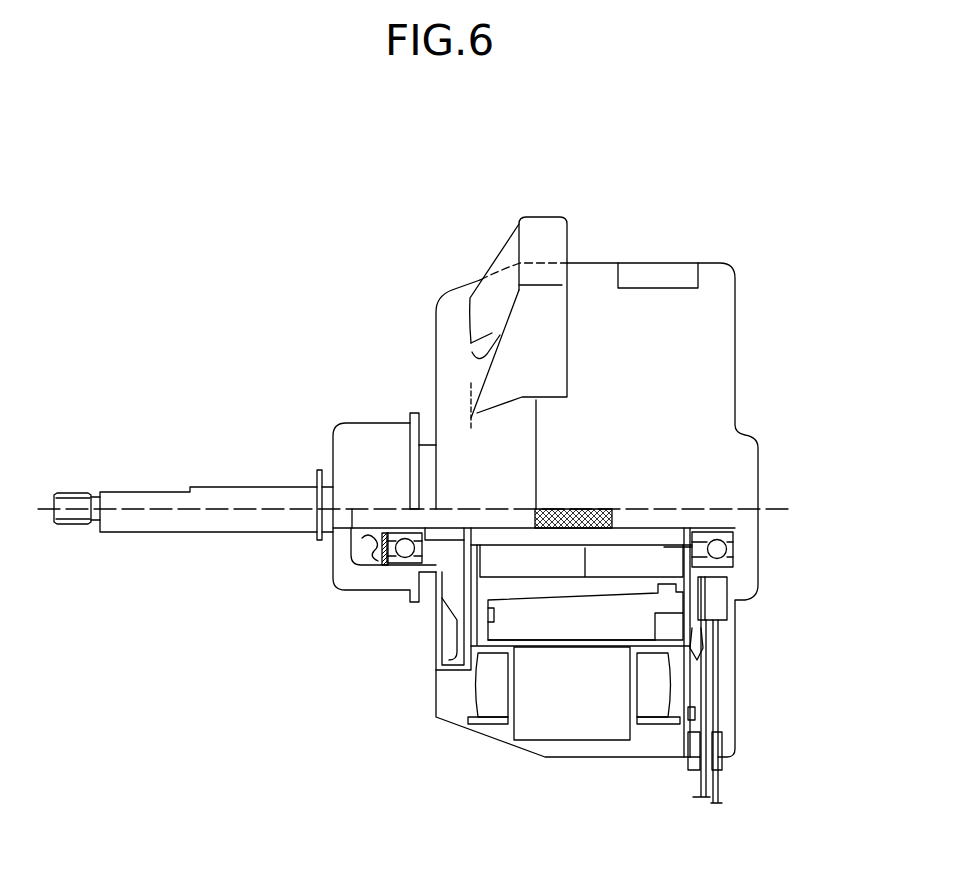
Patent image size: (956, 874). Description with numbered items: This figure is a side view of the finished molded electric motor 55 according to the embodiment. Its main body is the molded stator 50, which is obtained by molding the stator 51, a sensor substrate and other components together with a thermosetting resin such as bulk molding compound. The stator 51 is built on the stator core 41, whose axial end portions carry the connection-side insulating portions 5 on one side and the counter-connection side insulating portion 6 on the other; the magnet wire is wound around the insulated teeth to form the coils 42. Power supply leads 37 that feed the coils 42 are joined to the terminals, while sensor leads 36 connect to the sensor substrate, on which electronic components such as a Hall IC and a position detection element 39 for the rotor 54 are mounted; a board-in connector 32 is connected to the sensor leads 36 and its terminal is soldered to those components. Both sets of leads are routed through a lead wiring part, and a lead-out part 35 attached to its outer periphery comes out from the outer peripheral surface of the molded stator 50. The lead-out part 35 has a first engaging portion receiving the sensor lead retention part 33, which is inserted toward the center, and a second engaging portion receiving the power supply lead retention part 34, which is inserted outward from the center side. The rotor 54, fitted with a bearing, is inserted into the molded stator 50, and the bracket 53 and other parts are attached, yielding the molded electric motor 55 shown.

The connection-side insulating portion 5 is at (493, 722).
The counter-connection side insulating portion 6 is at (478, 655).
The board-in connector 32 is at (728, 578).
The sensor lead retention part 33 is at (723, 780).
The power supply lead retention part 34 is at (688, 768).
The lead-out part 35 is at (723, 758).
The sensor leads 36 is at (720, 797).
The power supply leads 37 is at (692, 790).
The position detection element 39 is at (625, 620).
The stator core 41 is at (555, 712).
The coil 42 is at (488, 695).
The molded stator 50 is at (594, 263).
The stator 51 is at (400, 808).
The bracket 53 is at (443, 633).
The rotor 54 is at (657, 613).
The molded electric motor 55 is at (648, 175).